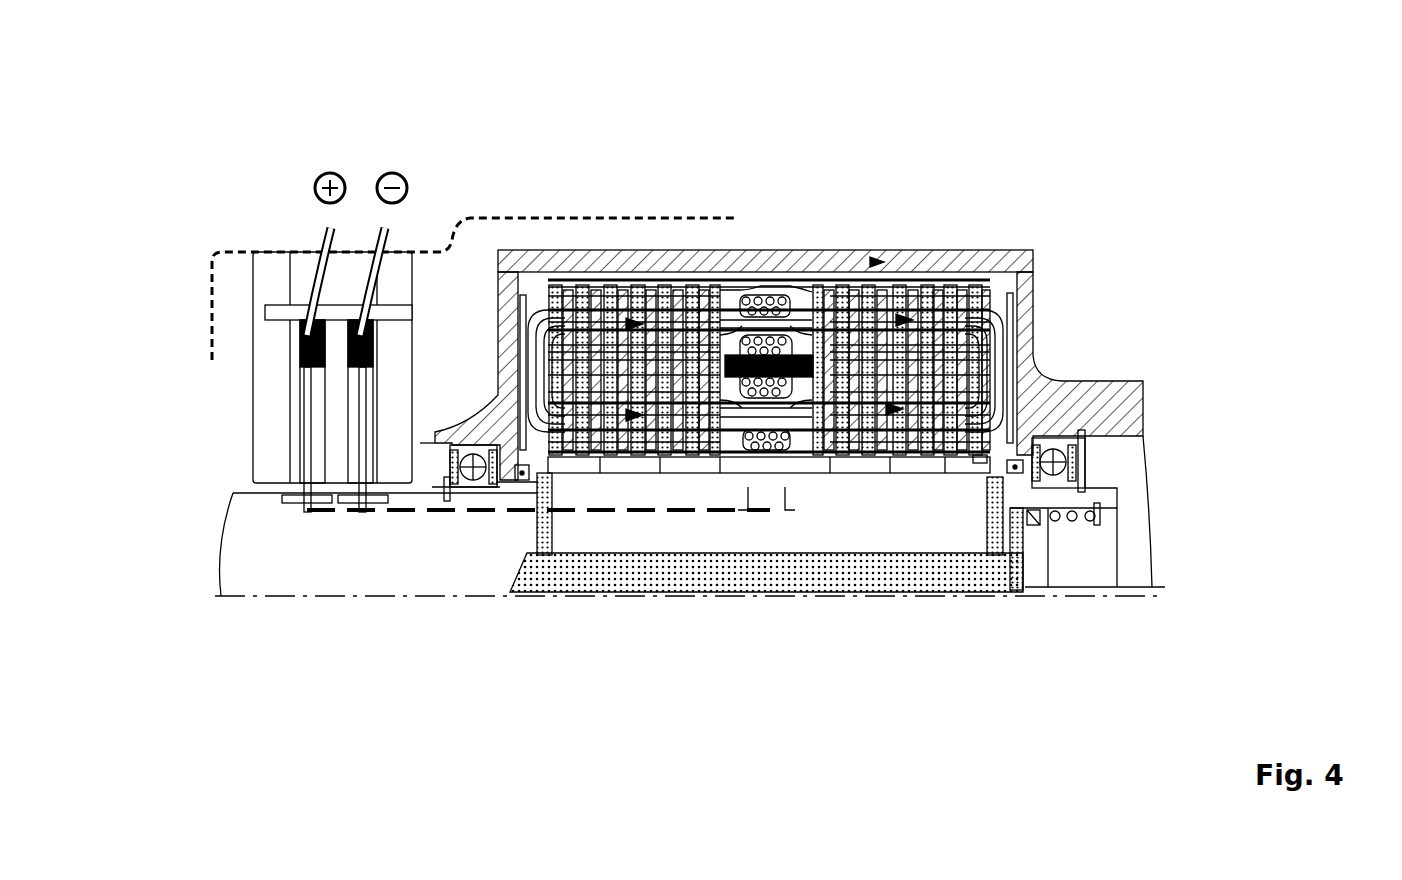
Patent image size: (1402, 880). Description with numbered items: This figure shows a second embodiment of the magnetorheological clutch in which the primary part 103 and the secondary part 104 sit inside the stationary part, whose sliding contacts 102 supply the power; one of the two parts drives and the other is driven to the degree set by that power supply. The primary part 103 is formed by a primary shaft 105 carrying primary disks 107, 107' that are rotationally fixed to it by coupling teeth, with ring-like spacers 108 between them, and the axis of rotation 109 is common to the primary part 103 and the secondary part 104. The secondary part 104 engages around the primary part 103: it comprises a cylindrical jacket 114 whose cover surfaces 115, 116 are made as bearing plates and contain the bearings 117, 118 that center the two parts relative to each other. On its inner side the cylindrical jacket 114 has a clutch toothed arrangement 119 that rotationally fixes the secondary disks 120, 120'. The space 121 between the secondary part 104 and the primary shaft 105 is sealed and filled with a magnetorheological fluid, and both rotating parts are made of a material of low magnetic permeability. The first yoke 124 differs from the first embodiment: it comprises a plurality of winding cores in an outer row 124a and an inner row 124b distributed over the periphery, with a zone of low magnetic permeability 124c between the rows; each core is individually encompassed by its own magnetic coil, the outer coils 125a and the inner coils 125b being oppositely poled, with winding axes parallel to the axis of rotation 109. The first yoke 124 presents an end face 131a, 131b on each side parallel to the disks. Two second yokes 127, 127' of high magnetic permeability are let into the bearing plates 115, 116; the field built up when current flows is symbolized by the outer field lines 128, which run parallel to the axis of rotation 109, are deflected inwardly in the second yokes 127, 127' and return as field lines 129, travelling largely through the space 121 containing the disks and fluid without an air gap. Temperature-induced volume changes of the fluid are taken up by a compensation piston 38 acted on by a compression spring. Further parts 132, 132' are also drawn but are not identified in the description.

The compensation piston 38 is at (1037, 541).
The sliding contacts 102 is at (357, 413).
The primary part 103 is at (388, 609).
The secondary part 104 is at (1050, 338).
The primary shaft 105 is at (507, 540).
The primary disk 107 is at (588, 508).
The primary disk 107' is at (902, 506).
The ring-like spacers 108 is at (633, 440).
The axis of rotation 109 is at (233, 597).
The cylindrical jacket 114 is at (880, 268).
The cover surface 115 is at (1028, 373).
The cover surface 116 is at (502, 408).
The bearing 117 is at (1140, 386).
The bearing 118 is at (435, 435).
The clutch toothed arrangement 119 is at (623, 282).
The secondary disk 120 is at (611, 248).
The secondary disk 120' is at (1174, 311).
The space 121 is at (603, 300).
The first yoke 124 is at (775, 270).
The winding cores (outer row) 124a is at (842, 265).
The winding cores (inner row) 124b is at (805, 445).
The zone of low magnetic permeability 124c is at (756, 300).
The magnetic coils (outer row) 125a is at (806, 270).
The magnetic coils (inner row) 125b is at (760, 447).
The second yoke 127 is at (430, 246).
The second yoke 127' is at (1163, 324).
The outer field lines 128 is at (973, 252).
The field lines 129 is at (792, 462).
The end face 131a is at (718, 290).
The end face 131b is at (716, 440).
The winding end turn 132 is at (486, 237).
The winding end turn 132' is at (981, 591).